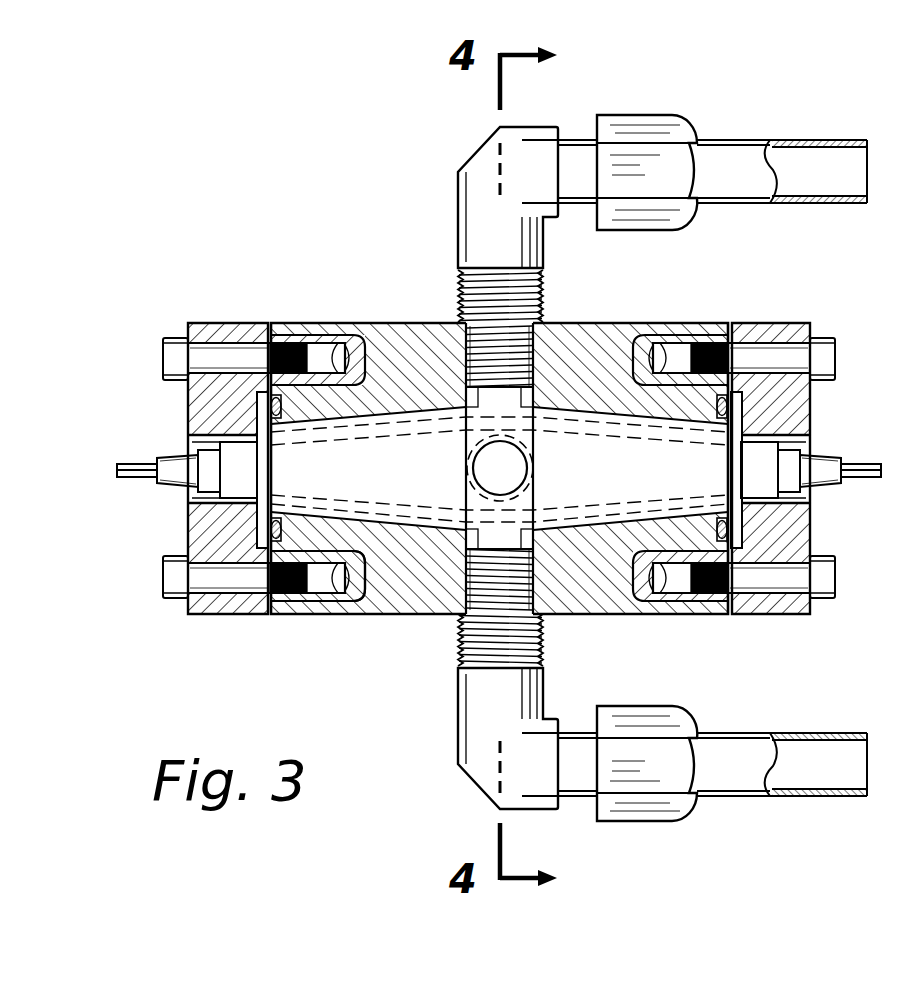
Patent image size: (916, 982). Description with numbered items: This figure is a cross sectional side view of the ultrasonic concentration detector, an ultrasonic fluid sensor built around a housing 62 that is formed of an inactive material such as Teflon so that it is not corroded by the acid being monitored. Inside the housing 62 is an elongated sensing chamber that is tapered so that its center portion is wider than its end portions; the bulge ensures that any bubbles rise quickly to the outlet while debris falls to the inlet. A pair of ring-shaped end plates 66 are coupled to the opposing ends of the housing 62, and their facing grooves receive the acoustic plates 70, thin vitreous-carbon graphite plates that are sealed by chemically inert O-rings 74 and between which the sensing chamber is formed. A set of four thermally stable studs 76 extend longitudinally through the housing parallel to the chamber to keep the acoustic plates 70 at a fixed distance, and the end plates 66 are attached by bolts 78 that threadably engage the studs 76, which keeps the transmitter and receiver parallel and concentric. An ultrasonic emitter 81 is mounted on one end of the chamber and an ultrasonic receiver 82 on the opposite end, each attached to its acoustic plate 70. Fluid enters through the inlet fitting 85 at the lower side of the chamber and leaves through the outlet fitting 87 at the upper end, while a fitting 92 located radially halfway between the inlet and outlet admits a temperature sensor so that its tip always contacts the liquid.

The housing 62 is at (360, 320).
The end plates 66 is at (232, 316).
The acoustic plates 70 is at (274, 463).
The O-rings 74 is at (287, 531).
The studs 76 is at (332, 586).
The bolts 78 is at (178, 586).
The ultrasonic emitter 81 is at (240, 470).
The ultrasonic receiver 82 is at (765, 461).
The inlet fitting 85 is at (472, 789).
The outlet fitting 87 is at (473, 146).
The fitting 92 is at (512, 436).